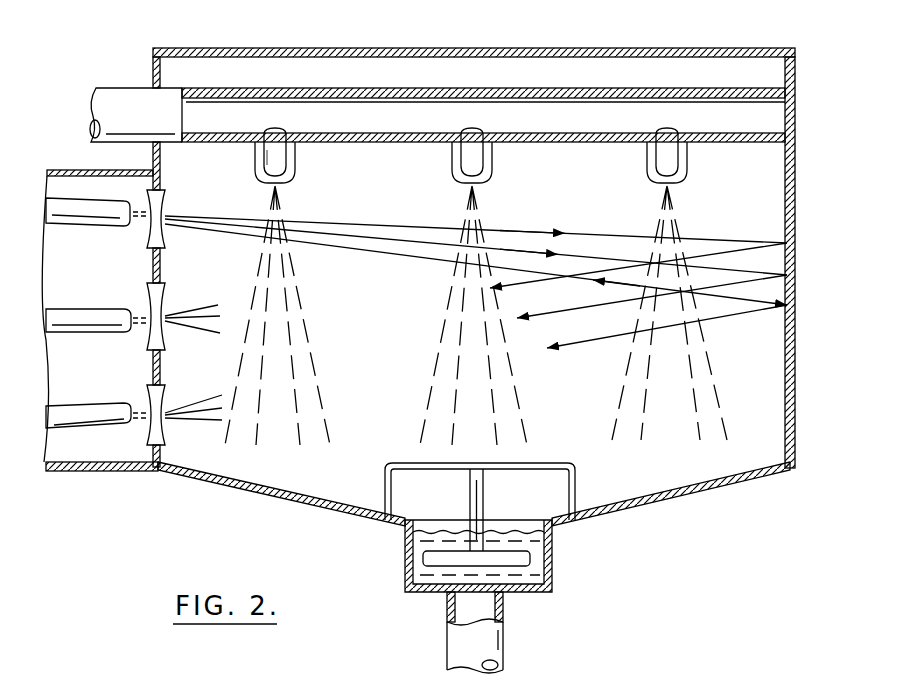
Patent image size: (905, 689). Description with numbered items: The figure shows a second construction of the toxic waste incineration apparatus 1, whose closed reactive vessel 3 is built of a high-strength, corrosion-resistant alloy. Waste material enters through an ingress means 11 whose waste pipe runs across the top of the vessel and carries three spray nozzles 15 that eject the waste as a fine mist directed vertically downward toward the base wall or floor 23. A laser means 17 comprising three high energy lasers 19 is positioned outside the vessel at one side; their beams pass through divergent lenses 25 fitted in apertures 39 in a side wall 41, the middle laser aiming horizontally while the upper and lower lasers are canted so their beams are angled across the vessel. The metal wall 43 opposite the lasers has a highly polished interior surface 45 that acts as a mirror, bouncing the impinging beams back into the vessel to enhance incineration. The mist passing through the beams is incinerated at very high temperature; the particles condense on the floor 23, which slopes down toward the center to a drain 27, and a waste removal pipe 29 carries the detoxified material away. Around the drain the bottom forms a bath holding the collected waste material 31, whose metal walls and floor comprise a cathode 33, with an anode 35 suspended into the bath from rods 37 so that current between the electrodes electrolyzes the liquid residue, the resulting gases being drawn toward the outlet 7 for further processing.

The apparatus 1 is at (168, 506).
The reactive vessel 3 is at (706, 78).
The outlet 7 is at (404, 607).
The ingress means 11 is at (634, 688).
The spray nozzle 15 is at (292, 178).
The laser means 17 is at (80, 355).
The high energy laser 19 is at (90, 225).
The base wall or floor 23 is at (283, 491).
The divergent lens 25 is at (168, 214).
The drain 27 is at (473, 592).
The waste removal pipe 29 is at (506, 645).
The liquid 31 is at (422, 543).
The cathode 33 is at (570, 582).
The baffle plate 35 is at (531, 558).
The rods 37 is at (574, 471).
The apertures 39 is at (162, 242).
The side wall 41 is at (150, 467).
The metal wall 43 is at (796, 312).
The highly polished interior surface 45 is at (785, 174).